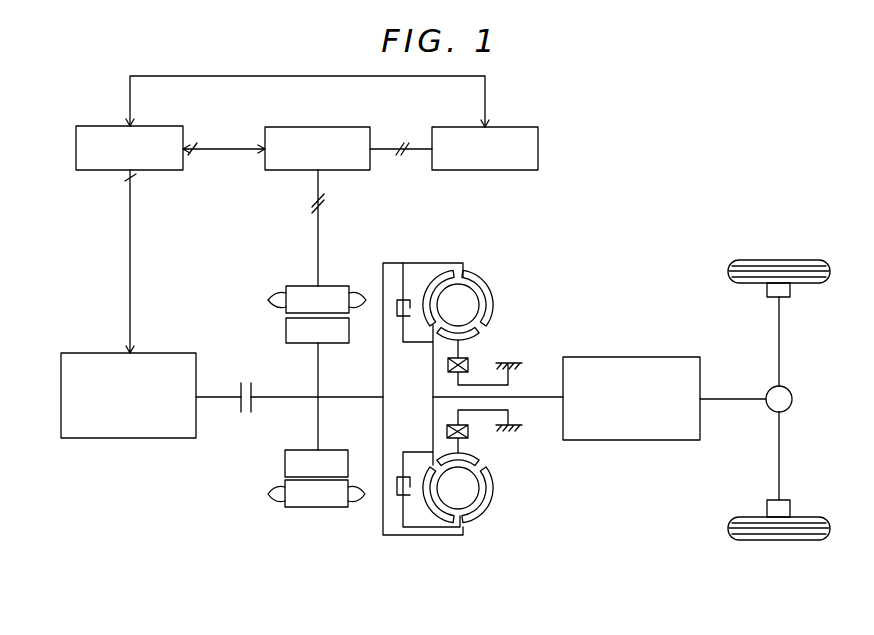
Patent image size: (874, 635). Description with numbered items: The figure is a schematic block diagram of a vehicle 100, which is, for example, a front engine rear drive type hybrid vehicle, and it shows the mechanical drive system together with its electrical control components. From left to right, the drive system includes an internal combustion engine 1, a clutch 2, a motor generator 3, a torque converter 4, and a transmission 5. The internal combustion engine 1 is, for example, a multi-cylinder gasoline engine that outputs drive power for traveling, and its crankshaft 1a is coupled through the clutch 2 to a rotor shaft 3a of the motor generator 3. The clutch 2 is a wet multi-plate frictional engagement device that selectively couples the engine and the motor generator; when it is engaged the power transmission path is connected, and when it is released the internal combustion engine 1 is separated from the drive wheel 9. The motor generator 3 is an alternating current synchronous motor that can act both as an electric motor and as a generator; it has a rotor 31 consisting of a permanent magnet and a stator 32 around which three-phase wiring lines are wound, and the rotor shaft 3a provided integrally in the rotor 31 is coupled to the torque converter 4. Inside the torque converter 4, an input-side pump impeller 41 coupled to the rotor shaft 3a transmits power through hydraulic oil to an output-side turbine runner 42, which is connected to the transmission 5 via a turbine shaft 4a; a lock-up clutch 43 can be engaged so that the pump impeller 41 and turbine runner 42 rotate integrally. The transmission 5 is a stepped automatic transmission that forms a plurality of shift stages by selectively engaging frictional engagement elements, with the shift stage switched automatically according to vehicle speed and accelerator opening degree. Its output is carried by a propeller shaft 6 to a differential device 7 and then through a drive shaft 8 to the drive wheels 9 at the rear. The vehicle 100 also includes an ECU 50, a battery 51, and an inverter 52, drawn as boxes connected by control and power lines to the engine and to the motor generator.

The internal combustion engine 1 is at (61, 393).
The crankshaft 1a is at (216, 396).
The clutch 2 is at (244, 428).
The motor generator 3 is at (303, 445).
The rotor shaft 3a is at (265, 396).
The rotor 31 is at (285, 468).
The stator 32 is at (316, 443).
The torque converter 4 is at (473, 424).
The turbine shaft 4a is at (517, 397).
The pump impeller 41 is at (478, 278).
The turbine runner 42 is at (450, 305).
The lock-up clutch 43 is at (409, 300).
The transmission 5 is at (625, 457).
The propeller shaft 6 is at (726, 405).
The differential device 7 is at (793, 399).
The drive shaft 8 is at (781, 344).
The drive wheel 9 is at (805, 262).
The ECU 50 is at (163, 126).
The battery 51 is at (531, 127).
The inverter 52 is at (351, 127).
The vehicle 100 is at (657, 158).